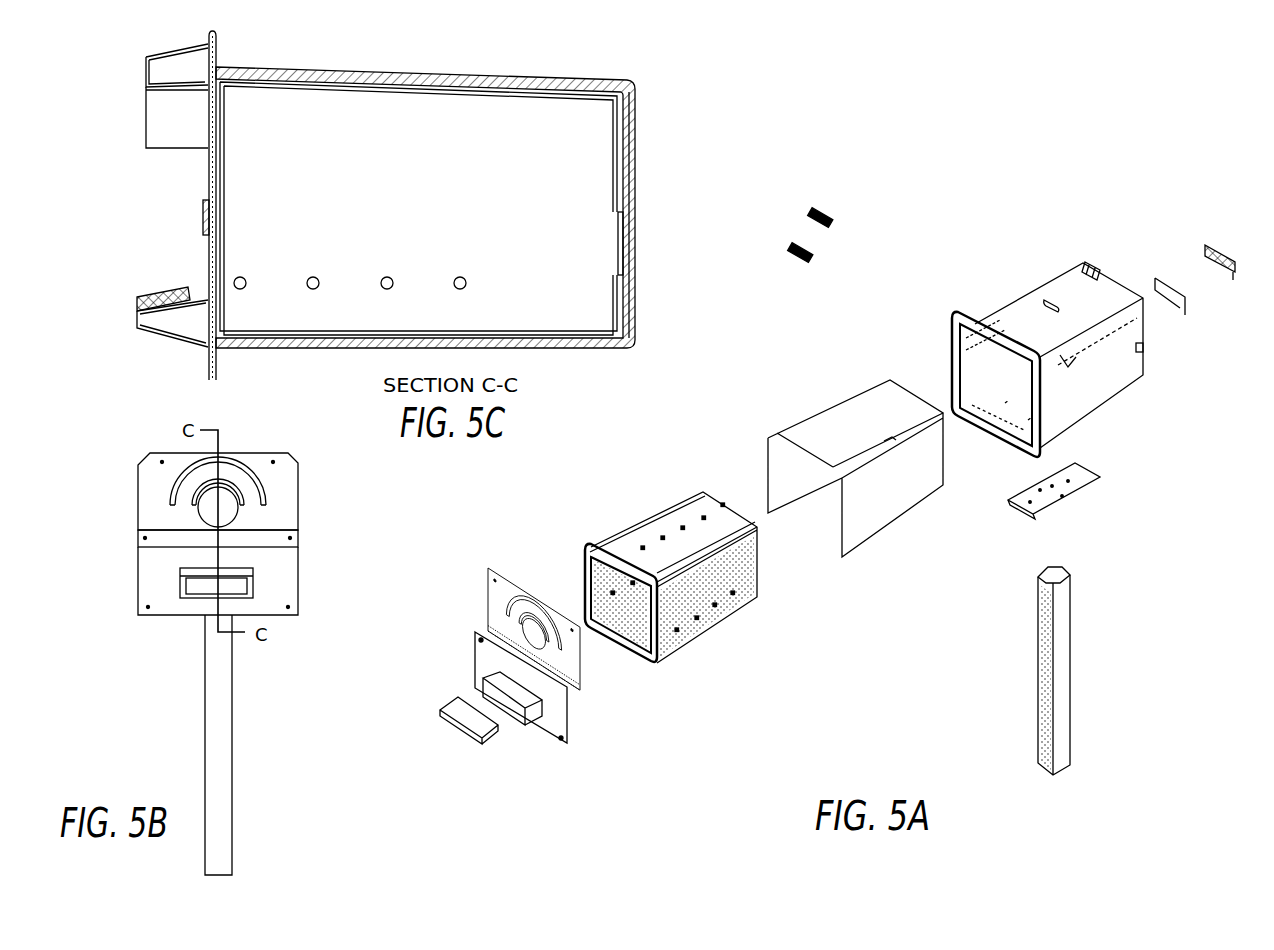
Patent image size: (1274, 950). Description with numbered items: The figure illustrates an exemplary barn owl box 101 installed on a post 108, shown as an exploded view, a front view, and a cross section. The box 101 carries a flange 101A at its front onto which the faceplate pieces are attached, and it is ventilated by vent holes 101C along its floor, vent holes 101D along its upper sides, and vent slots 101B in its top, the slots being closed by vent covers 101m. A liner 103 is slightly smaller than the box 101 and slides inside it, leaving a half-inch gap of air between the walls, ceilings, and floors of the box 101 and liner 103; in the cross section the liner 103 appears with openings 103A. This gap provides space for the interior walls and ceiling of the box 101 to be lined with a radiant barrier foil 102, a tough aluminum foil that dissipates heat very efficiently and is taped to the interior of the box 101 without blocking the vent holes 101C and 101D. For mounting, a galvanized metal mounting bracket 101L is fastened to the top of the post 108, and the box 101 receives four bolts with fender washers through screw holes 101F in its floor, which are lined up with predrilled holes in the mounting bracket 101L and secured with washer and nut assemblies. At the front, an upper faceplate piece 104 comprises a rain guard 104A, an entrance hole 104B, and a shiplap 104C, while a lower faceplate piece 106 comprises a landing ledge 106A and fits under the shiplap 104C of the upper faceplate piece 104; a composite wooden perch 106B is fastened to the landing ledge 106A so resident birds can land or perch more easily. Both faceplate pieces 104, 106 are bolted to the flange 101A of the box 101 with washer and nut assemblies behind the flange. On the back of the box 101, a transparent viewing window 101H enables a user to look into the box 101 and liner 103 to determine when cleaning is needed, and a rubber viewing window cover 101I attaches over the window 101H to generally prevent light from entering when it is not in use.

In FIG. 5C, the box 101 is at (606, 82).
In FIG. 5A, the box 101 is at (1004, 291).
In FIG. 5A, the flange 101A is at (1043, 443).
In FIG. 5A, the vent slots 101B is at (1088, 271).
In FIG. 5A, the vent holes 101C is at (1011, 378).
In FIG. 5A, the vent holes 101D is at (1088, 372).
In FIG. 5A, the screw holes 101F is at (1009, 408).
In FIG. 5A, the transparent viewing window 101H is at (1162, 271).
In FIG. 5A, the viewing window cover 101I is at (1225, 287).
In FIG. 5A, the mounting bracket 101L is at (1070, 505).
In FIG. 5A, the vent covers 101m is at (802, 207).
In FIG. 5A, the radiant barrier foil 102 is at (842, 392).
In FIG. 5C, the liner 103 is at (436, 82).
In FIG. 5A, the liner 103 is at (666, 504).
In FIG. 5C, the liner holes 103A is at (384, 277).
In FIG. 5A, the liner holes 103A is at (715, 530).
In FIG. 5B, the upper faceplate piece 104 is at (285, 485).
In FIG. 5A, the upper faceplate piece 104 is at (486, 567).
In FIG. 5C, the rain guard 104A is at (154, 106).
In FIG. 5B, the rain guard 104A is at (237, 477).
In FIG. 5A, the rain guard 104A is at (548, 642).
In FIG. 5B, the entrance hole 104B is at (208, 513).
In FIG. 5A, the entrance hole 104B is at (514, 632).
In FIG. 5C, the shiplap 104C is at (204, 220).
In FIG. 5B, the shiplap 104C is at (140, 540).
In FIG. 5A, the shiplap 104C is at (584, 693).
In FIG. 5B, the lower faceplate piece 106 is at (282, 582).
In FIG. 5A, the lower faceplate piece 106 is at (468, 665).
In FIG. 5B, the landing ledge 106A is at (197, 585).
In FIG. 5A, the landing ledge 106A is at (518, 740).
In FIG. 5C, the composite wooden perch 106B is at (160, 326).
In FIG. 5A, the composite wooden perch 106B is at (450, 734).
In FIG. 5B, the post 108 is at (225, 712).
In FIG. 5A, the post 108 is at (1063, 672).